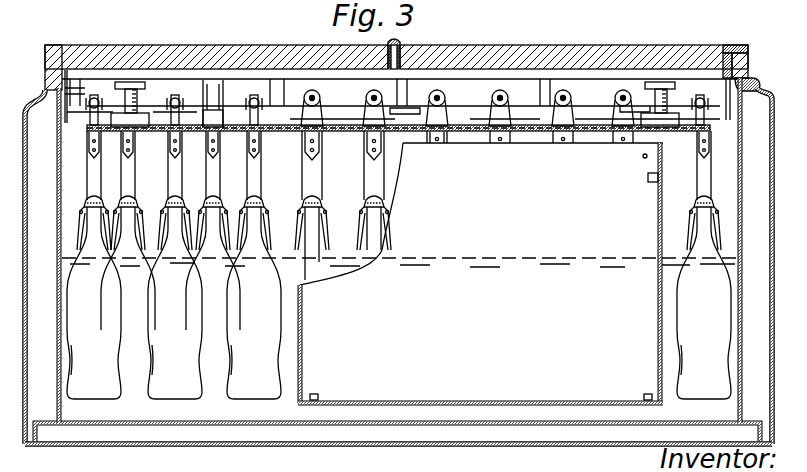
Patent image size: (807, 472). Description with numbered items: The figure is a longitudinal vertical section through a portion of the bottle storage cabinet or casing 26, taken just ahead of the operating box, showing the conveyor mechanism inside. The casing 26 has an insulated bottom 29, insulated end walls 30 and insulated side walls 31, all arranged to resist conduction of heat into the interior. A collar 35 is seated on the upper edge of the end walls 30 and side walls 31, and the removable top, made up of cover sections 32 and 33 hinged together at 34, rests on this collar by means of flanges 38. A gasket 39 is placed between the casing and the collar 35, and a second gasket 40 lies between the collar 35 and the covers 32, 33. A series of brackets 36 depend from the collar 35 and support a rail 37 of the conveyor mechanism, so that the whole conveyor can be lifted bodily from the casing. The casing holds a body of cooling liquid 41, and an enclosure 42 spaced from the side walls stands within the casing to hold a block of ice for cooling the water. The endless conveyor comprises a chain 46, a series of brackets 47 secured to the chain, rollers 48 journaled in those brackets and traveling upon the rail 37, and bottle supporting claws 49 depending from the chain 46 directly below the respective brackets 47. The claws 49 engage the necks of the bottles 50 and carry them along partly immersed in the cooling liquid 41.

The bottle storage cabinet 26 is at (138, 452).
The bottom 29 is at (291, 441).
The end walls 30 is at (28, 386).
The side walls 31 is at (292, 4).
The cover section 32 is at (213, 48).
The cover section 33 is at (613, 46).
The hinge 34 is at (400, 44).
The collar 35 is at (45, 70).
The brackets 36 is at (67, 100).
The rail 37 is at (80, 96).
The flanges 38 is at (748, 46).
The gasket 39 is at (759, 85).
The gasket 40 is at (750, 56).
The cooling liquid 41 is at (462, 258).
The enclosure 42 is at (657, 192).
The chain 46 is at (325, 134).
The brackets 47 is at (441, 108).
The rollers 48 is at (369, 98).
The bottle supporting claws 49 is at (393, 232).
The bottles 50 is at (399, 265).